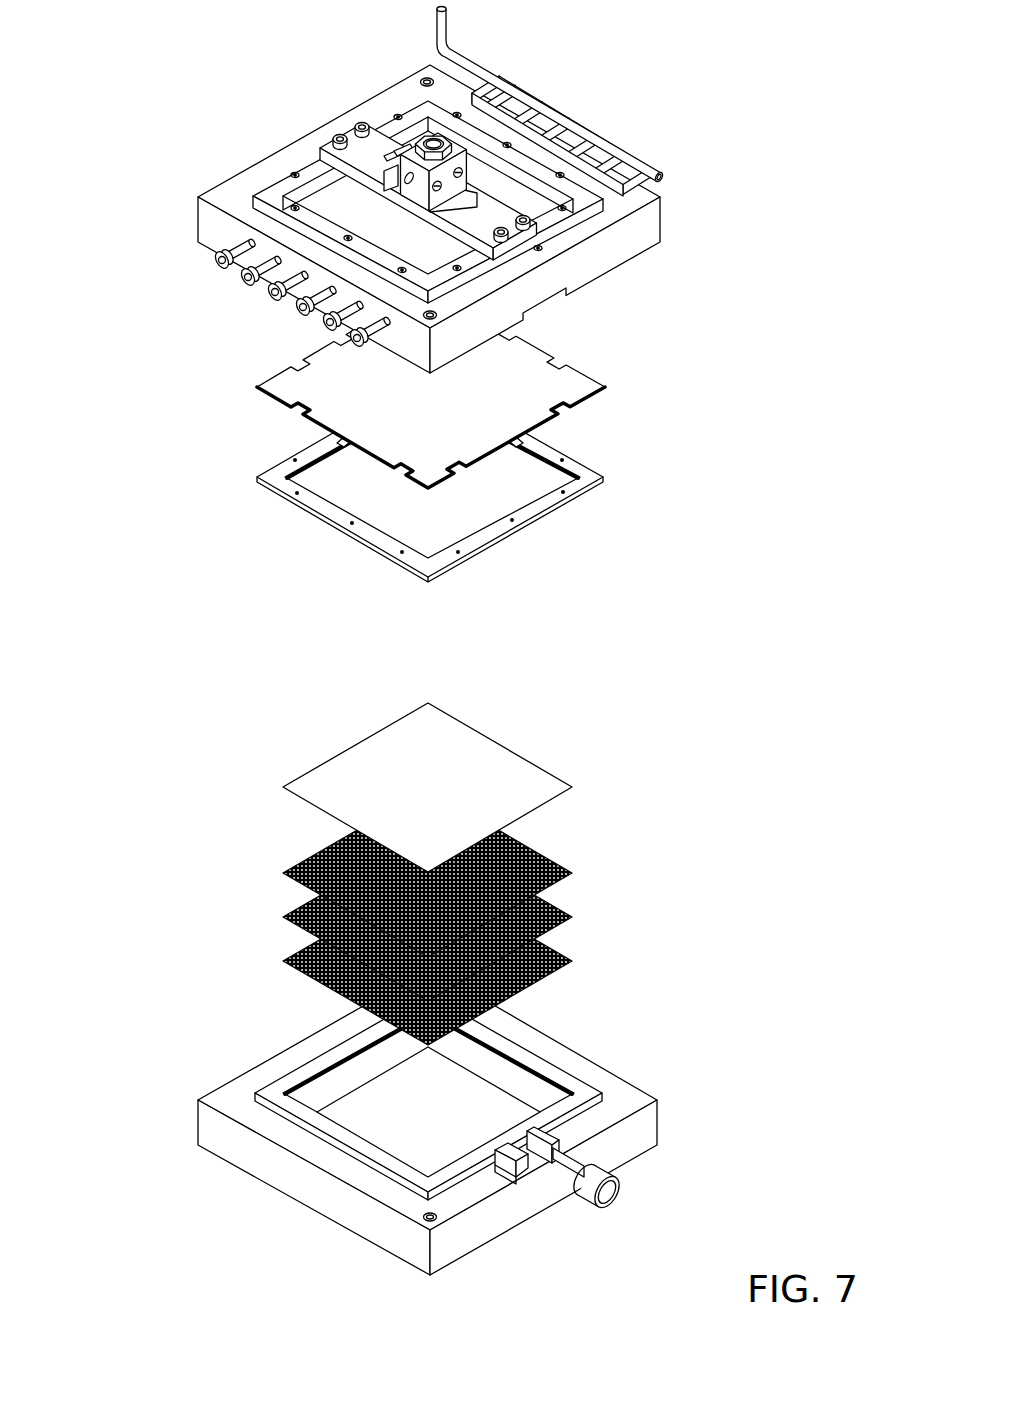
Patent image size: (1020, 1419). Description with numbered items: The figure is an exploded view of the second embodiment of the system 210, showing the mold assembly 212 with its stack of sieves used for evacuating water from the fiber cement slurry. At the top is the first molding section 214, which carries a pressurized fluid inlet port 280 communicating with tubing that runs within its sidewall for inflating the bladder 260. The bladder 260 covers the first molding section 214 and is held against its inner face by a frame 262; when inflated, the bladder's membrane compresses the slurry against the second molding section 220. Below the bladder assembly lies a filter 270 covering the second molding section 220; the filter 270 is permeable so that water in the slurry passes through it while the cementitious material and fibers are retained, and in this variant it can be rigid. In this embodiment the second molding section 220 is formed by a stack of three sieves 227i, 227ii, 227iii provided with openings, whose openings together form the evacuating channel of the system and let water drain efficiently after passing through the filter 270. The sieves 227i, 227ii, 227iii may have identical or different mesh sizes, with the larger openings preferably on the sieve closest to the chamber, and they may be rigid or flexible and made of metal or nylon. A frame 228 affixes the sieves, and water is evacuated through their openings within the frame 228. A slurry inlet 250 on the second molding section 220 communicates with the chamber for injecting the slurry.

The system 210 is at (168, 52).
The mold assembly 212 is at (715, 343).
The first molding section 214 is at (210, 227).
The second molding section 220 is at (248, 856).
The sieve 227i is at (538, 853).
The sieve 227ii is at (555, 907).
The sieve 227iii is at (555, 953).
The frame 228 is at (348, 1213).
The slurry inlet 250 is at (608, 1190).
The bladder 260 is at (530, 357).
The frame 262 is at (587, 477).
The filter 270 is at (507, 770).
The pressurized fluid inlet port 280 is at (445, 22).